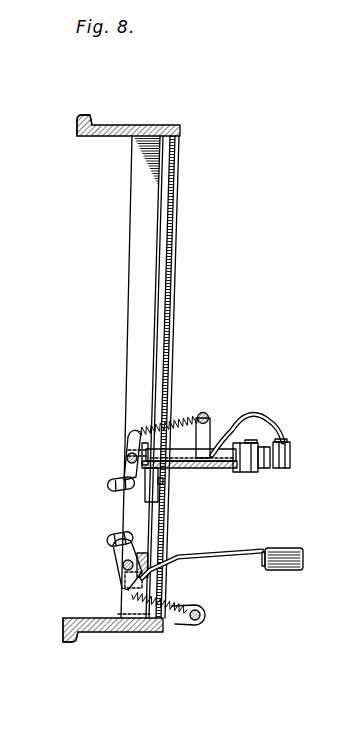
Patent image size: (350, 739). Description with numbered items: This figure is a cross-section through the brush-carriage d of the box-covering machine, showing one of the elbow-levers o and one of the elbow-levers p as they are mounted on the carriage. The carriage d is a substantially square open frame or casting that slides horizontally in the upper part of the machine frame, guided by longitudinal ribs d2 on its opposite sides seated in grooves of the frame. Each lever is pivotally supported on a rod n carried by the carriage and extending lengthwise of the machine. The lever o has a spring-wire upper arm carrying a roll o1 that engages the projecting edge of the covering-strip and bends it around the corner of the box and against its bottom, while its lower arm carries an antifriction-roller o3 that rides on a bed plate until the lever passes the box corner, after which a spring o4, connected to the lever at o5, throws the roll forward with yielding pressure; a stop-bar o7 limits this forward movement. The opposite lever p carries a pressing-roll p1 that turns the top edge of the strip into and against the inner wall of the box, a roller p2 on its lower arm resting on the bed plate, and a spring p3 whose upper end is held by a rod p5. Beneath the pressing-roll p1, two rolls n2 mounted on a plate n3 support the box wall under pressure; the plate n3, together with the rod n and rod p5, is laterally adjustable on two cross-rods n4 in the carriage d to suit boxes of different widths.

The carriage d is at (169, 127).
The longitudinal ribs d2 is at (85, 116).
The cross-rods n4 is at (163, 312).
The plate n3 is at (216, 469).
The rod n is at (125, 456).
The support rolls n2 is at (262, 470).
The elbow-lever p is at (260, 413).
The pressing-roll p1 is at (292, 456).
The roller p2 is at (109, 483).
The spring p3 is at (180, 412).
The rod p5 is at (204, 411).
The elbow-lever o is at (235, 557).
The roll o1 is at (290, 566).
The antifriction-roller o3 is at (109, 540).
The spring o4 is at (181, 626).
The spring connection o5 is at (132, 598).
The stop-bar o7 is at (152, 556).